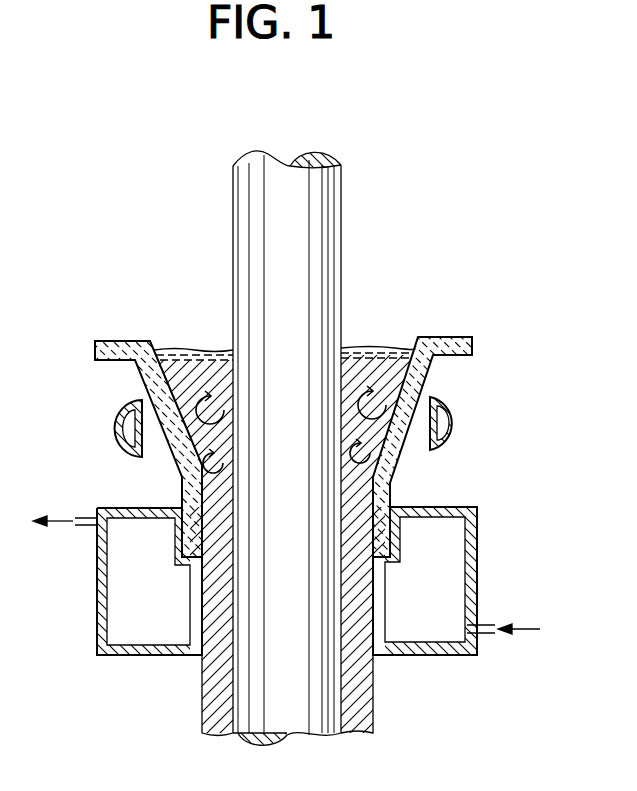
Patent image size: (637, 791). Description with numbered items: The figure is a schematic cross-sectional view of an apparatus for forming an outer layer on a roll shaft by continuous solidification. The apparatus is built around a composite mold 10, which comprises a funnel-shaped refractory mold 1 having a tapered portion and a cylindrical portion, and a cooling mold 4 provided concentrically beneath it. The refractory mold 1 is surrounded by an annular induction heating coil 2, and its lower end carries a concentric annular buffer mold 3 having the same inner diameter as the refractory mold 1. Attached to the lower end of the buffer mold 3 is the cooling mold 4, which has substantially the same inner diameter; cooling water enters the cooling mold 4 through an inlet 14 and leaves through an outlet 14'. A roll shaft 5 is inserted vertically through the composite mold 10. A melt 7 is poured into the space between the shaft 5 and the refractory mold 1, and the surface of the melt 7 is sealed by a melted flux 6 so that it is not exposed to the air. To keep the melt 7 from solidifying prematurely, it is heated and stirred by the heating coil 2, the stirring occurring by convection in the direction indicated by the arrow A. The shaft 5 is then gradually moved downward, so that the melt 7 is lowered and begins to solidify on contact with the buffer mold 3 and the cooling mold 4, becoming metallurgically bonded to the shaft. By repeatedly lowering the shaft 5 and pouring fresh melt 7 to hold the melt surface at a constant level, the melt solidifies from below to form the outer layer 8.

The refractory mold 1 is at (478, 341).
The induction heating coil 2 is at (458, 425).
The buffer mold 3 is at (392, 490).
The cooling mold 4 is at (478, 552).
The roll shaft 5 is at (326, 200).
The melted flux 6 is at (377, 350).
The melt 7 is at (387, 380).
The outer layer 8 is at (360, 690).
The composite mold 10 is at (470, 400).
The inlet 14 is at (505, 611).
The outlet 14' is at (65, 492).
The arrow A is at (198, 457).